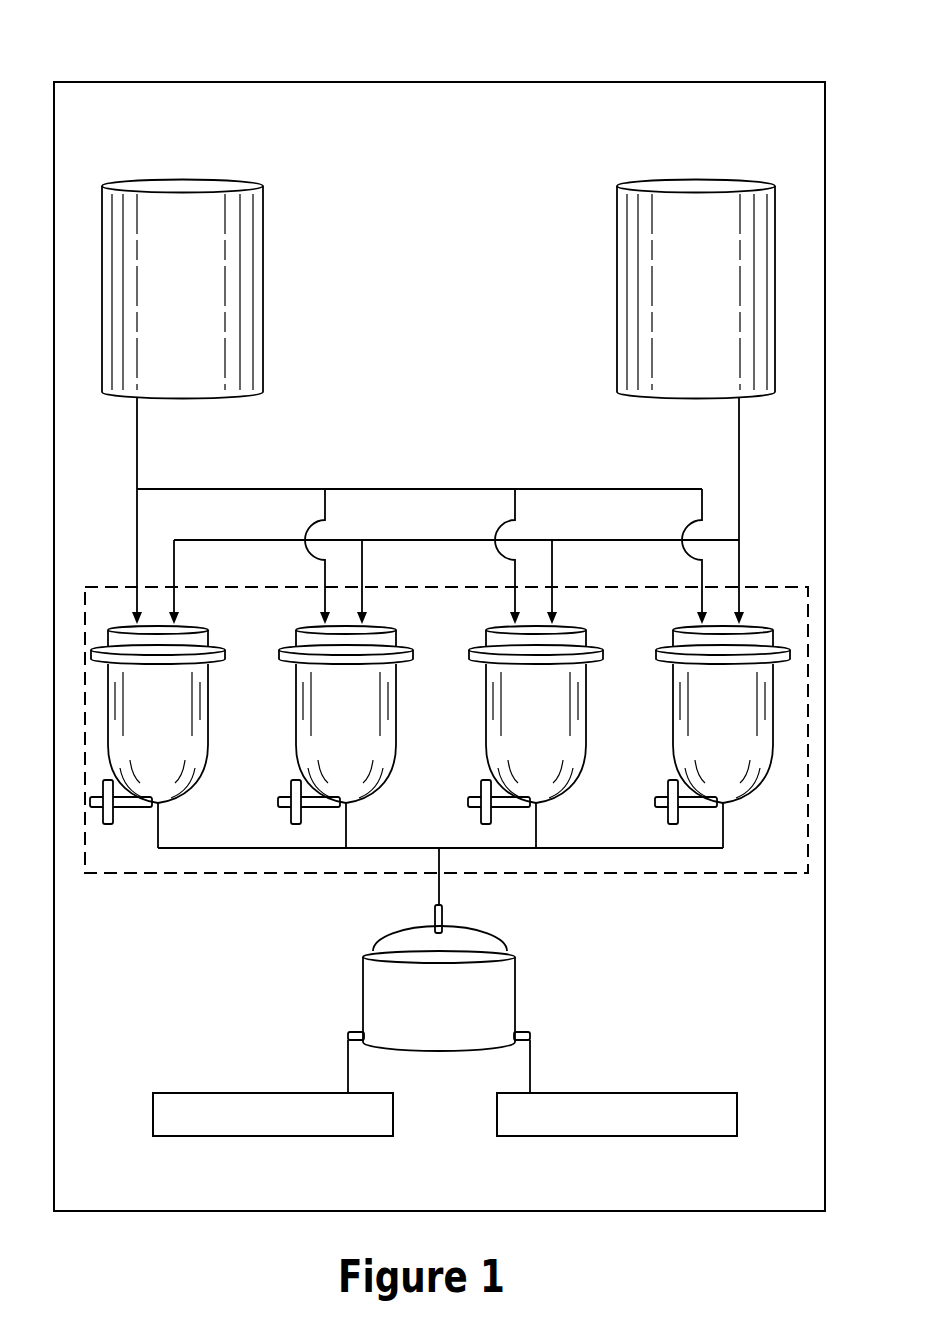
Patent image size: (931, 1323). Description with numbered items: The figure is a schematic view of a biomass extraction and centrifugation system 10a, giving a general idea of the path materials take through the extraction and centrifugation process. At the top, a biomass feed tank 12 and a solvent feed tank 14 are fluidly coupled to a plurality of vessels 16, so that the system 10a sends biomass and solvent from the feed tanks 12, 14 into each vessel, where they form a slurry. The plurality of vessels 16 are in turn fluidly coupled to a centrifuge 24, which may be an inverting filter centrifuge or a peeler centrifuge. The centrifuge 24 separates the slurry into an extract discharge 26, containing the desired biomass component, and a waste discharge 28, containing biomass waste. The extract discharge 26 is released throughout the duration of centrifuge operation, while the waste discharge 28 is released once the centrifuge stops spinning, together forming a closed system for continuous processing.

The biomass extraction and centrifugation system 10a is at (136, 78).
The biomass feed tank 12 is at (183, 180).
The solvent feed tank 14 is at (680, 180).
The plurality of vessels 16 is at (627, 875).
The centrifuge 24 is at (439, 978).
The extract discharge 26 is at (273, 1088).
The waste discharge 28 is at (617, 1088).